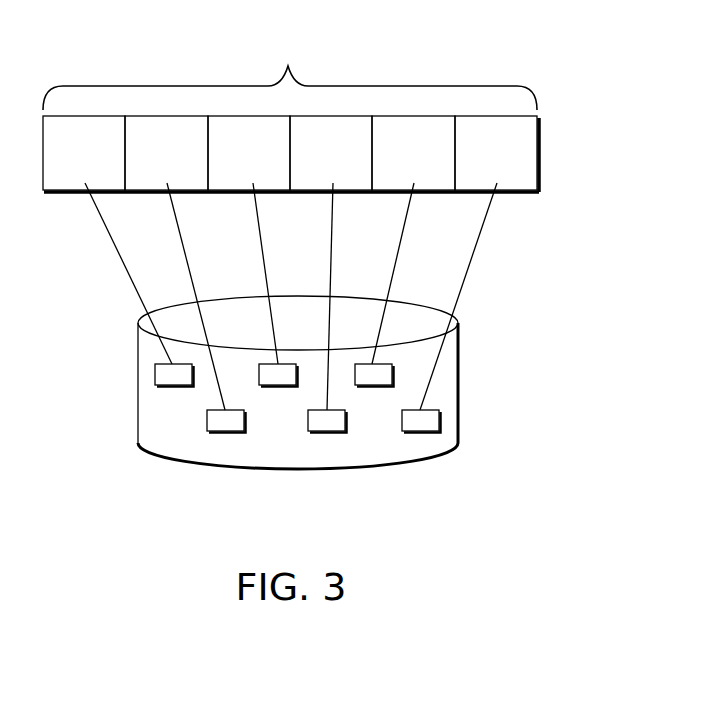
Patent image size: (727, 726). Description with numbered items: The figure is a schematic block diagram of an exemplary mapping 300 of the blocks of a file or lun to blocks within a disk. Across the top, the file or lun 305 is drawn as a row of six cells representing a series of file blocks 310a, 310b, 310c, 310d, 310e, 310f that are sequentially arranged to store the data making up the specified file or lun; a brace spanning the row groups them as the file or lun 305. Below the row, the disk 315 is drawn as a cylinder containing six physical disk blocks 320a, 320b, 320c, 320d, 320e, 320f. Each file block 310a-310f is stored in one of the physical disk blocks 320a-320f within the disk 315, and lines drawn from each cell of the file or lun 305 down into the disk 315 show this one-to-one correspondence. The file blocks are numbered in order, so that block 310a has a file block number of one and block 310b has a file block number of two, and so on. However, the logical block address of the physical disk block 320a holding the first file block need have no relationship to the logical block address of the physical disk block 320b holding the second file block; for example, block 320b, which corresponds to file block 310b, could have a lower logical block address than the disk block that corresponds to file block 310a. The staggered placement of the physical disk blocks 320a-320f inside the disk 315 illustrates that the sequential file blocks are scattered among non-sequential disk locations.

The mapping 300 is at (505, 62).
The file or lun 305 is at (290, 64).
The file block 310a is at (61, 161).
The file block 310b is at (143, 161).
The file block 310c is at (226, 161).
The file block 310d is at (308, 161).
The file block 310e is at (390, 161).
The file block 310f is at (474, 161).
The disk 315 is at (465, 396).
The physical disk block 320a is at (177, 387).
The physical disk block 320b is at (225, 432).
The physical disk block 320c is at (282, 387).
The physical disk block 320d is at (323, 432).
The physical disk block 320e is at (372, 387).
The physical disk block 320f is at (425, 432).